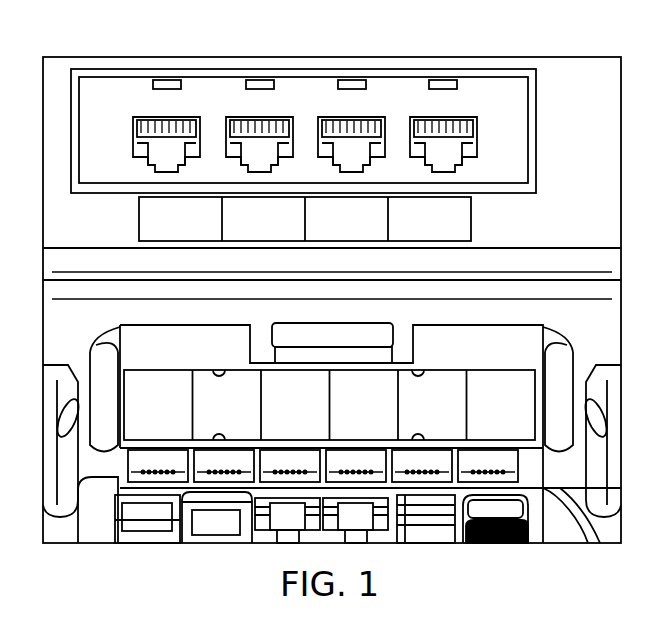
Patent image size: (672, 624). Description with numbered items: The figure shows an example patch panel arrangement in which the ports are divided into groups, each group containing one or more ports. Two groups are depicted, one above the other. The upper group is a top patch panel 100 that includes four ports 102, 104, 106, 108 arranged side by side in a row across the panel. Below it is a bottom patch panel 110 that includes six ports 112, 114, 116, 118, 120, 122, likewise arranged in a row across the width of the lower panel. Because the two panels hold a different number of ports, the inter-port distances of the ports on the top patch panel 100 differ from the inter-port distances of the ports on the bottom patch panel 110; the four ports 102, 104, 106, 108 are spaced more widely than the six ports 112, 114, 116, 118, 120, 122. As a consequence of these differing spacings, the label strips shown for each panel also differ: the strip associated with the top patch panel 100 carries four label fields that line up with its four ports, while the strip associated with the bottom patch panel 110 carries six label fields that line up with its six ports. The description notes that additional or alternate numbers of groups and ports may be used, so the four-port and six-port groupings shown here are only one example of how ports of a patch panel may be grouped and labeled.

The top patch panel 100 is at (62, 82).
The port 102 is at (148, 117).
The port 104 is at (243, 117).
The port 106 is at (333, 117).
The port 108 is at (426, 117).
The bottom patch panel 110 is at (72, 335).
The port 112 is at (180, 462).
The port 114 is at (248, 462).
The port 116 is at (288, 462).
The port 118 is at (375, 462).
The port 120 is at (443, 462).
The port 122 is at (510, 462).